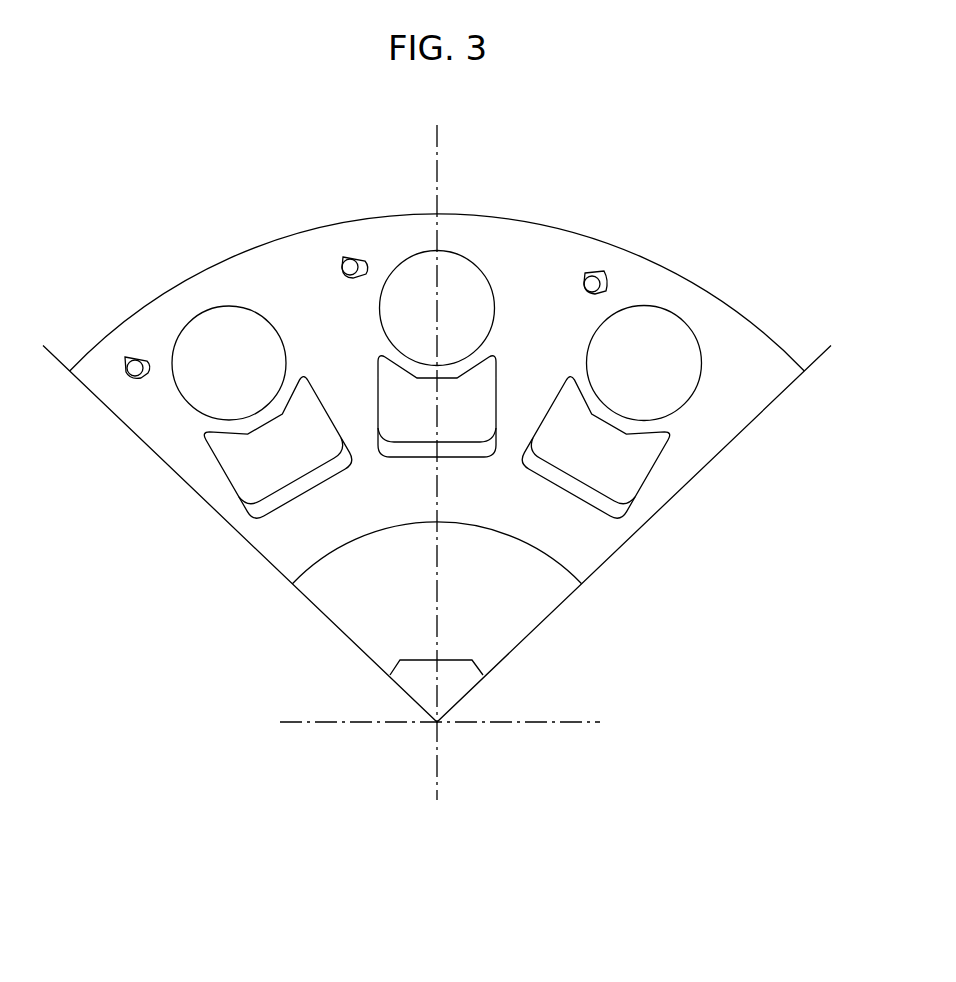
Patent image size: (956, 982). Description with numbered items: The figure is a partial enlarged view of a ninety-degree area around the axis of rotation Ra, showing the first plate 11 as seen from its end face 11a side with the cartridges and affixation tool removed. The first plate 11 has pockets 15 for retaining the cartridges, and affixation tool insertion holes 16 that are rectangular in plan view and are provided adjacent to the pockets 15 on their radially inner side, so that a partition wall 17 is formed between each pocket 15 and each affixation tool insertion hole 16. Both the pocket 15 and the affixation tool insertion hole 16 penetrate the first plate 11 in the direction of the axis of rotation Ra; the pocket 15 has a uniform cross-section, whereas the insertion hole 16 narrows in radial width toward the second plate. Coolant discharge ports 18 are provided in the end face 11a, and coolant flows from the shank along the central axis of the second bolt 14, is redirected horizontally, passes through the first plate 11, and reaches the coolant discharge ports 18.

The first plate 11 is at (742, 316).
The end face 11a is at (522, 252).
The second bolt 14 is at (520, 612).
The pocket 15 is at (243, 316).
The affixation tool insertion hole 16 is at (242, 482).
The partition wall 17 is at (258, 420).
The coolant discharge port 18 is at (130, 355).
The axis of rotation Ra is at (437, 722).